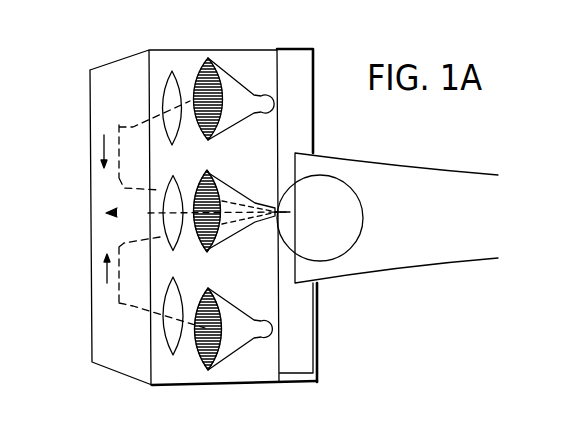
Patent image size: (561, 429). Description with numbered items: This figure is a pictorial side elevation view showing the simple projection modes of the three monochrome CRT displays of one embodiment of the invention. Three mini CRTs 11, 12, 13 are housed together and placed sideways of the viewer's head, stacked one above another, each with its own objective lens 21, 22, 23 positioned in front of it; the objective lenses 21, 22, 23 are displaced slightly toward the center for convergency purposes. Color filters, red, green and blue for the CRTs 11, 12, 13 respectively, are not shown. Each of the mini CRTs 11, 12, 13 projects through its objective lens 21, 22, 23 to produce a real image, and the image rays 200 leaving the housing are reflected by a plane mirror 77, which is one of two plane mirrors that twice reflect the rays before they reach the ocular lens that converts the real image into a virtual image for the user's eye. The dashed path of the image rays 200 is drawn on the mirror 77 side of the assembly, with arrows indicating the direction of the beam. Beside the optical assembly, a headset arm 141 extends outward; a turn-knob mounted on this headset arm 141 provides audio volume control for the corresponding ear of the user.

The plane mirror 77 is at (103, 66).
The headset arm 141 is at (387, 187).
The image rays 200 is at (118, 178).
The objective lens 21 is at (170, 73).
The objective lens 22 is at (170, 177).
The objective lens 23 is at (173, 356).
The mini CRT 11 is at (220, 65).
The mini CRT 12 is at (250, 158).
The mini CRT 13 is at (215, 292).